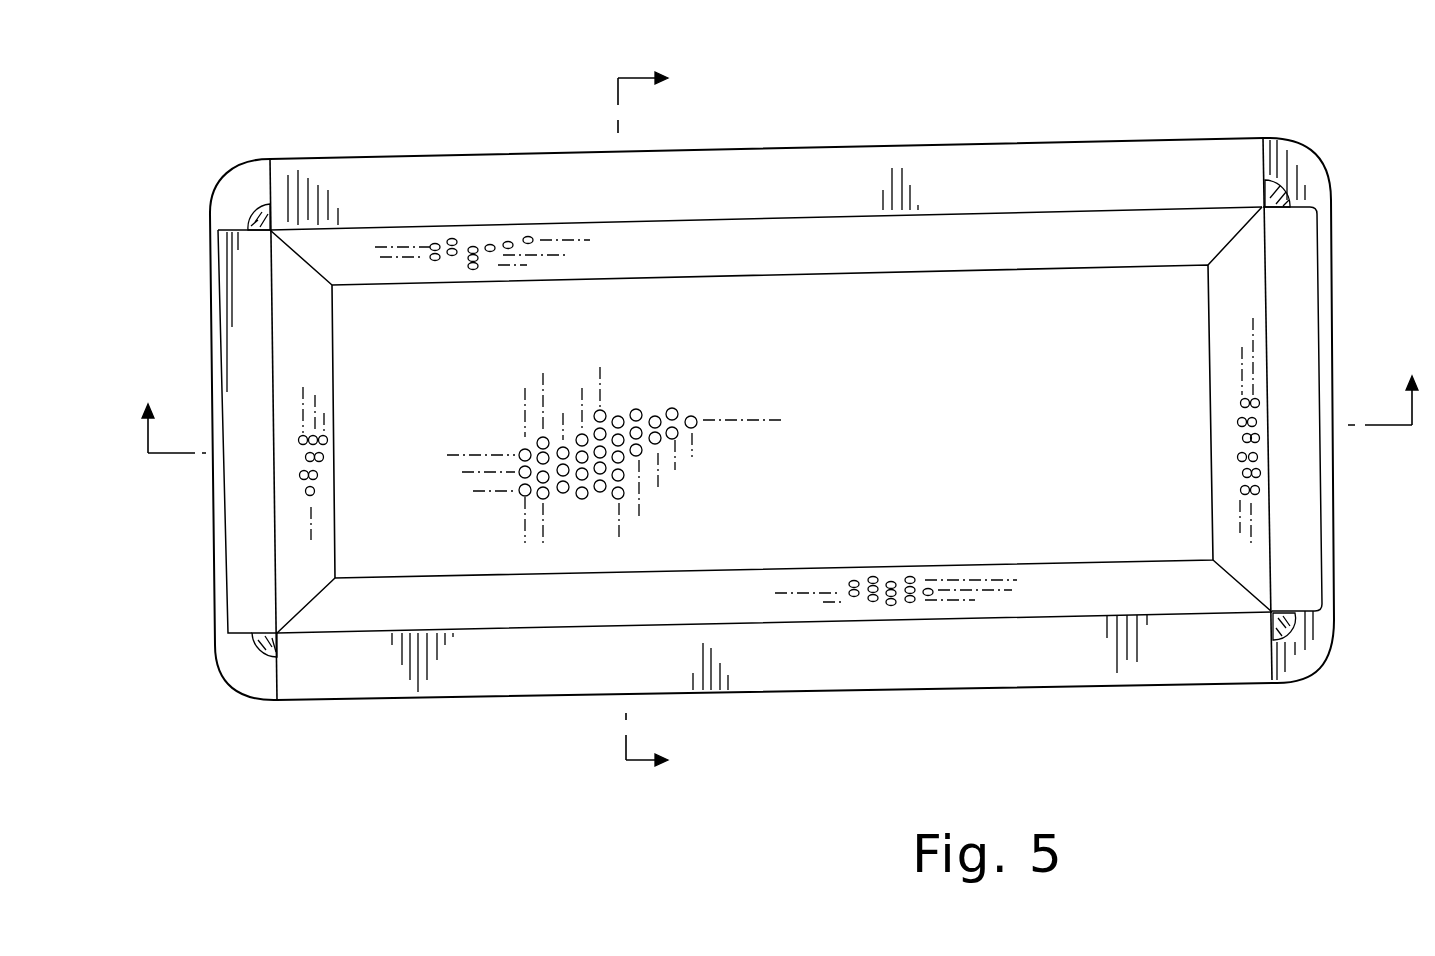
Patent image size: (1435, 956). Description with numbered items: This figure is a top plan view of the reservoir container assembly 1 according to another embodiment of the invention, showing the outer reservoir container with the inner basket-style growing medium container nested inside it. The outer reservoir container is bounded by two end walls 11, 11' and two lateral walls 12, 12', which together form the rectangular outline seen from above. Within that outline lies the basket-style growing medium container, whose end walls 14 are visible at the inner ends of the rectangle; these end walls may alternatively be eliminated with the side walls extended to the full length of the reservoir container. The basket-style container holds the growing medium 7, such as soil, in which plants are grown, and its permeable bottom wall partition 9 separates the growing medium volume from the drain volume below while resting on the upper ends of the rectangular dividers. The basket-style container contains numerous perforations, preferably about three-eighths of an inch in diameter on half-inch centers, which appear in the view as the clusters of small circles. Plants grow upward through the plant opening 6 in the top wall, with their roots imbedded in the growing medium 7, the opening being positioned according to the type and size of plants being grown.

The reservoir container assembly 1 is at (987, 82).
The plant opening 6 is at (777, 397).
The growing medium 7 is at (662, 420).
The permeable bottom wall partition 9 is at (945, 382).
The end wall 11 is at (167, 430).
The end wall 11' is at (1376, 440).
The lateral wall 12 is at (800, 173).
The lateral wall 12' is at (650, 681).
The end wall 14 is at (1247, 279).